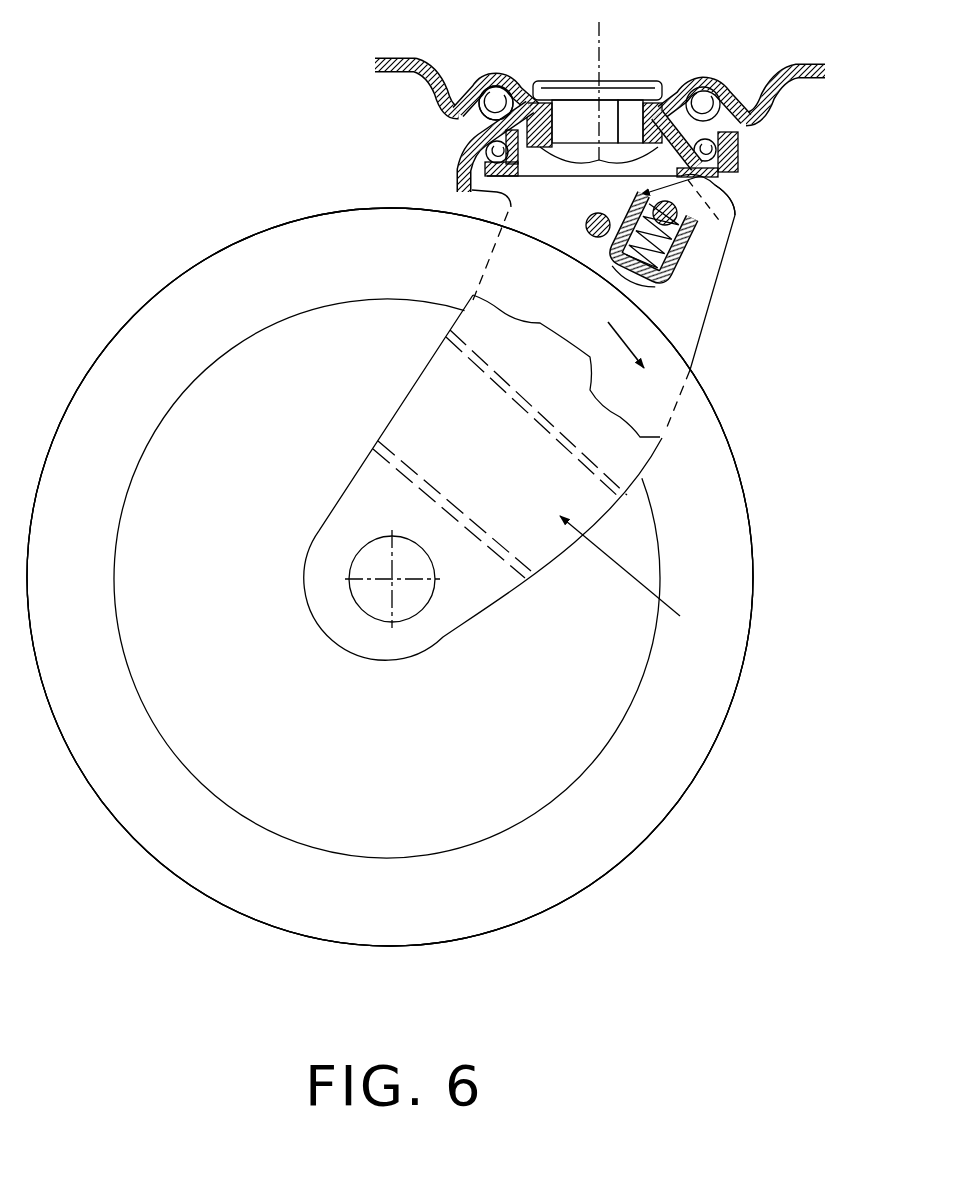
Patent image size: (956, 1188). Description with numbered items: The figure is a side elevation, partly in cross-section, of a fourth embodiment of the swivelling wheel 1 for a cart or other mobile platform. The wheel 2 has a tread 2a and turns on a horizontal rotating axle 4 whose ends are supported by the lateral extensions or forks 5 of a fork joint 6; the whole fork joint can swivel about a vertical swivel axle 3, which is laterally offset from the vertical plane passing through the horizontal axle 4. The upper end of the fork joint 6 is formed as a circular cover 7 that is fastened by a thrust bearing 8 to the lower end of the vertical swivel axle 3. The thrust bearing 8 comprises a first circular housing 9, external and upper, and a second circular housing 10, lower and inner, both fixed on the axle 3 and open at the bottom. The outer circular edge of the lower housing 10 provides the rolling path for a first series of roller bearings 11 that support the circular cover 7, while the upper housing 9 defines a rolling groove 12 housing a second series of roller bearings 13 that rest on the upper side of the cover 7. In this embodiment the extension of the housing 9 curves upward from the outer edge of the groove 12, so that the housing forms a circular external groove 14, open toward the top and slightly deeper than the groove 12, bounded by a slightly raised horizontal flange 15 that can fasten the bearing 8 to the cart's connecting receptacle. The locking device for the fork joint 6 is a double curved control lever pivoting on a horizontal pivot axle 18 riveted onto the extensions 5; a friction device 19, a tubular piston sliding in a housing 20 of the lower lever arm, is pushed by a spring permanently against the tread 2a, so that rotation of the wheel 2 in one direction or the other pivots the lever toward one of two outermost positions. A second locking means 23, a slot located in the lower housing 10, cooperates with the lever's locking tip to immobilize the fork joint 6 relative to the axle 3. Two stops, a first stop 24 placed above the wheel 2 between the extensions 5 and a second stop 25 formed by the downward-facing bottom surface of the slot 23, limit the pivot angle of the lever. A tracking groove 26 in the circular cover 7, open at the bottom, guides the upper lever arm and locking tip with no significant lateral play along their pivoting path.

The swivelling wheel 1 is at (762, 551).
The wheel 2 is at (651, 793).
The tread 2a is at (742, 473).
The vertical swivel axle 3 is at (655, 84).
The horizontal rotating axle 4 is at (388, 577).
The lateral extensions or forks 5 is at (640, 447).
The fork joint 6 is at (680, 616).
The circular cover 7 is at (457, 186).
The thrust bearing 8 is at (444, 157).
The first circular housing 9 is at (440, 115).
The second circular housing 10 is at (502, 178).
The first series of roller bearings 11 is at (722, 148).
The groove 12 is at (733, 118).
The second series of roller bearings 13 is at (494, 86).
The circular external groove 14 is at (745, 84).
The horizontal flange 15 is at (802, 60).
The pivot axle 18 is at (697, 231).
The friction device 19 is at (613, 276).
The housing 20 is at (685, 240).
The second locking means 23 is at (728, 226).
The first stop 24 is at (586, 224).
The second stop 25 is at (700, 176).
The tracking groove 26 is at (742, 175).